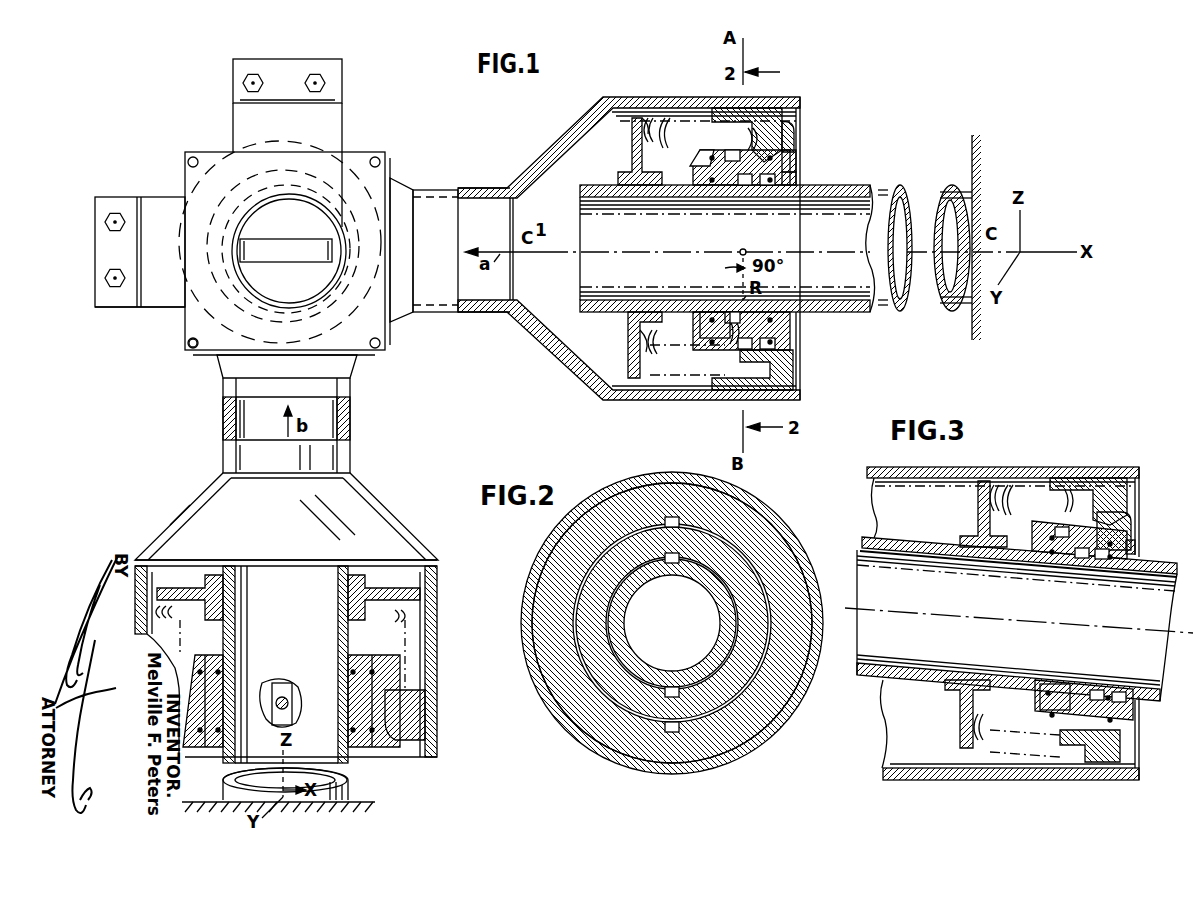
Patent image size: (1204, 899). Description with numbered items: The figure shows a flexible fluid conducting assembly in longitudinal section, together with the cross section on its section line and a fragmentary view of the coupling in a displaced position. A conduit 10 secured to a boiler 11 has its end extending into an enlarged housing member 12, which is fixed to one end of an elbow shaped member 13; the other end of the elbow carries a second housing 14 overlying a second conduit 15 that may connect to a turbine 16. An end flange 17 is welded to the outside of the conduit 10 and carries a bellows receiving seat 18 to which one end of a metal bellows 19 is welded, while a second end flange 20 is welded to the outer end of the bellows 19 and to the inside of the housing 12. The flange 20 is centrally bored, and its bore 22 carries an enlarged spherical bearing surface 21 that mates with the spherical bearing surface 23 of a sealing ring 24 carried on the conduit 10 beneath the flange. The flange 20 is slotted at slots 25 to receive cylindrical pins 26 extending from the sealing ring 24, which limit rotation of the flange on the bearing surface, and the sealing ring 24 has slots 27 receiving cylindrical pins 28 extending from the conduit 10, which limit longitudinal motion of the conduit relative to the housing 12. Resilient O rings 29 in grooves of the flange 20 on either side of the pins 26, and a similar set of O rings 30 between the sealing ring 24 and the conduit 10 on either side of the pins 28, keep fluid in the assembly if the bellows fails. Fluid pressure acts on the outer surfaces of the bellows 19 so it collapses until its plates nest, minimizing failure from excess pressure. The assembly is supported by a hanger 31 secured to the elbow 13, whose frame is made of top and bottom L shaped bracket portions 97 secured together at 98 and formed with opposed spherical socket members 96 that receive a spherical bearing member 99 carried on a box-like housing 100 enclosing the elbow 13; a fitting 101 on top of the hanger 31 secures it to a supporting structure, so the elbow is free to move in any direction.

In FIG. 1, the conduit 10 is at (862, 185).
In FIG. 2, the conduit 10 is at (634, 590).
In FIG. 3, the conduit 10 is at (1155, 568).
In FIG. 1, the boiler 11 is at (970, 153).
In FIG. 1, the housing member 12 is at (802, 103).
In FIG. 2, the housing member 12 is at (762, 518).
In FIG. 3, the housing member 12 is at (1118, 467).
In FIG. 1, the elbow shaped member 13 is at (434, 190).
In FIG. 1, the second housing 14 is at (390, 508).
In FIG. 1, the second conduit 15 is at (348, 790).
In FIG. 1, the turbine 16 is at (370, 802).
In FIG. 1, the end flange 17 is at (631, 152).
In FIG. 3, the end flange 17 is at (976, 518).
In FIG. 1, the bellows receiving seat 18 is at (649, 118).
In FIG. 3, the bellows receiving seat 18 is at (996, 482).
In FIG. 1, the metal bellows 19 is at (672, 122).
In FIG. 3, the metal bellows 19 is at (1022, 484).
In FIG. 1, the second end flange 20 is at (786, 121).
In FIG. 2, the second end flange 20 is at (778, 540).
In FIG. 3, the second end flange 20 is at (1128, 488).
In FIG. 1, the spherical bearing surface 21 is at (797, 160).
In FIG. 1, the bore 22 is at (797, 180).
In FIG. 3, the bore 22 is at (1134, 546).
In FIG. 1, the spherical bearing surface 23 is at (696, 160).
In FIG. 1, the sealing ring 24 is at (700, 185).
In FIG. 2, the sealing ring 24 is at (600, 636).
In FIG. 3, the sealing ring 24 is at (1043, 560).
In FIG. 1, the slots 25 is at (730, 150).
In FIG. 2, the slots 25 is at (674, 732).
In FIG. 3, the slots 25 is at (1062, 527).
In FIG. 1, the cylindrical pins 26 is at (792, 136).
In FIG. 2, the cylindrical pins 26 is at (675, 517).
In FIG. 3, the cylindrical pins 26 is at (1096, 530).
In FIG. 1, the slots 27 is at (767, 186).
In FIG. 2, the slots 27 is at (675, 687).
In FIG. 3, the slots 27 is at (1102, 560).
In FIG. 1, the cylindrical pins 28 is at (744, 186).
In FIG. 2, the cylindrical pins 28 is at (674, 563).
In FIG. 3, the cylindrical pins 28 is at (1082, 560).
In FIG. 1, the resilient O rings 29 is at (708, 156).
In FIG. 3, the resilient O rings 29 is at (1042, 715).
In FIG. 1, the O rings 30 is at (720, 312).
In FIG. 3, the O rings 30 is at (1050, 684).
In FIG. 1, the hanger 31 is at (152, 196).
In FIG. 1, the spherical socket member 96 is at (236, 265).
In FIG. 1, the bracket portions 97 is at (162, 309).
In FIG. 1, the securing point 98 is at (104, 278).
In FIG. 1, the spherical bearing member 99 is at (188, 343).
In FIG. 1, the box-like housing 100 is at (370, 355).
In FIG. 1, the fitting 101 is at (268, 240).